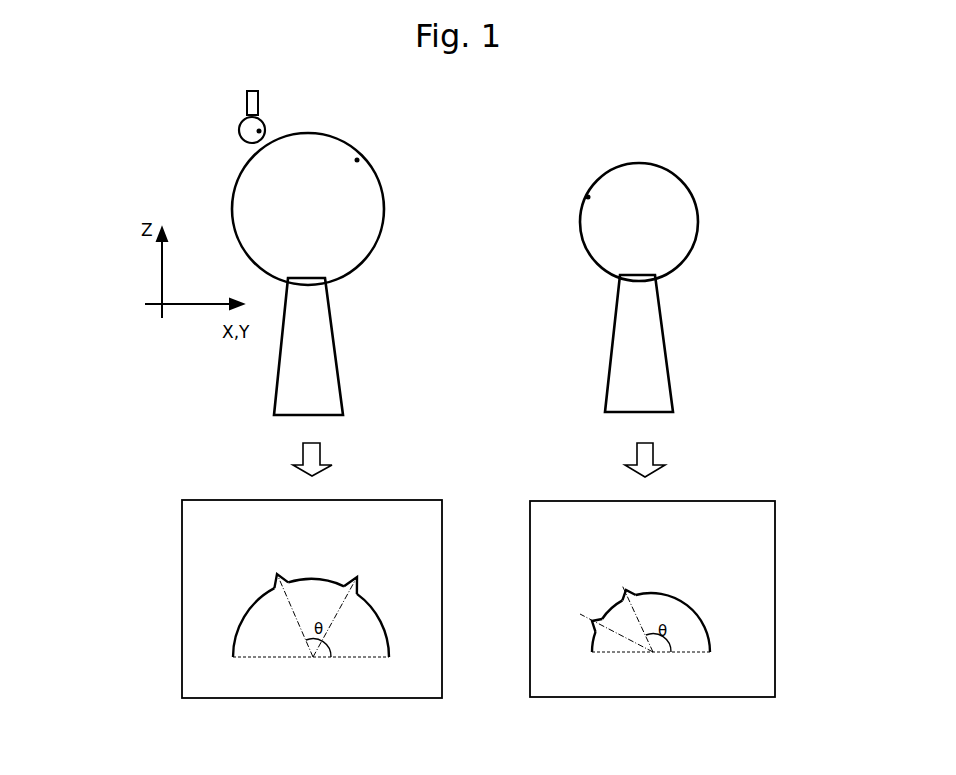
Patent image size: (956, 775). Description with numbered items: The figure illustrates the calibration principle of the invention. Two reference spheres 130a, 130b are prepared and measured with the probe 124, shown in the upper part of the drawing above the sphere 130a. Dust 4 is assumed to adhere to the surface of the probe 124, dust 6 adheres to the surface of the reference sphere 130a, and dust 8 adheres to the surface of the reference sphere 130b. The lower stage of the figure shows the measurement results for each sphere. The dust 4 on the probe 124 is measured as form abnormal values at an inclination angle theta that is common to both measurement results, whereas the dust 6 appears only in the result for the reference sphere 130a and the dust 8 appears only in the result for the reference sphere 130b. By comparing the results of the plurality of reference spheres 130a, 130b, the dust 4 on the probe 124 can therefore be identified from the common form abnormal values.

The dust 4 is at (262, 130).
The dust 6 is at (358, 158).
The dust 8 is at (586, 195).
The probe 124 is at (243, 121).
The reference sphere 130a is at (357, 255).
The reference sphere 130b is at (670, 250).